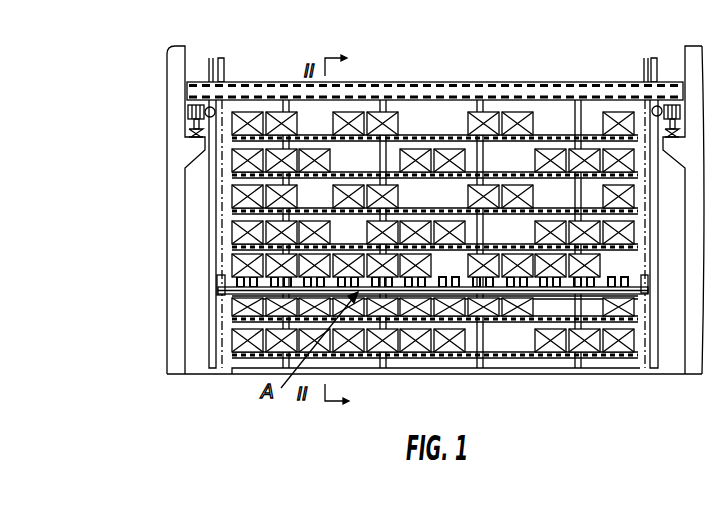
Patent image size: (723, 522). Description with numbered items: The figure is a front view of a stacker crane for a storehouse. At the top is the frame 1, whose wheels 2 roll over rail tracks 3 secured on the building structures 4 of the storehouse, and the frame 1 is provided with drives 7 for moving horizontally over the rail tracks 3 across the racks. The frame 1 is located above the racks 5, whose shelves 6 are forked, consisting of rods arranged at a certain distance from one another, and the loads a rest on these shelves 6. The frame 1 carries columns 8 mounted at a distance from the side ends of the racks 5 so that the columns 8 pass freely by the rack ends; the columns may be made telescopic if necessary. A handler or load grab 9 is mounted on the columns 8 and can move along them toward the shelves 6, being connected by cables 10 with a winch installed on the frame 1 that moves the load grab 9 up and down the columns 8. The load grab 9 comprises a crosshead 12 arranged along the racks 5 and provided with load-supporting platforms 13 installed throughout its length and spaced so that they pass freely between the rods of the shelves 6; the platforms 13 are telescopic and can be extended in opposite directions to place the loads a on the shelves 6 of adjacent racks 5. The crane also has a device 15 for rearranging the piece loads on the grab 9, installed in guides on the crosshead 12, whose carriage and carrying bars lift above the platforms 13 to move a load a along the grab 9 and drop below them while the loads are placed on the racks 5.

The frame 1 is at (575, 88).
The loads a is at (618, 117).
The wheels 2 is at (676, 110).
The rail tracks 3 is at (676, 122).
The building structures 4 is at (678, 157).
The racks 5 is at (473, 147).
The shelves 6 is at (575, 142).
The drives 7 is at (657, 105).
The columns 8 is at (654, 238).
The load grab 9 is at (213, 313).
The cables 10 is at (648, 196).
The crosshead 12 is at (632, 297).
The load-supporting platforms 13 is at (628, 278).
The device for rearranging the piece loads 15 is at (378, 302).